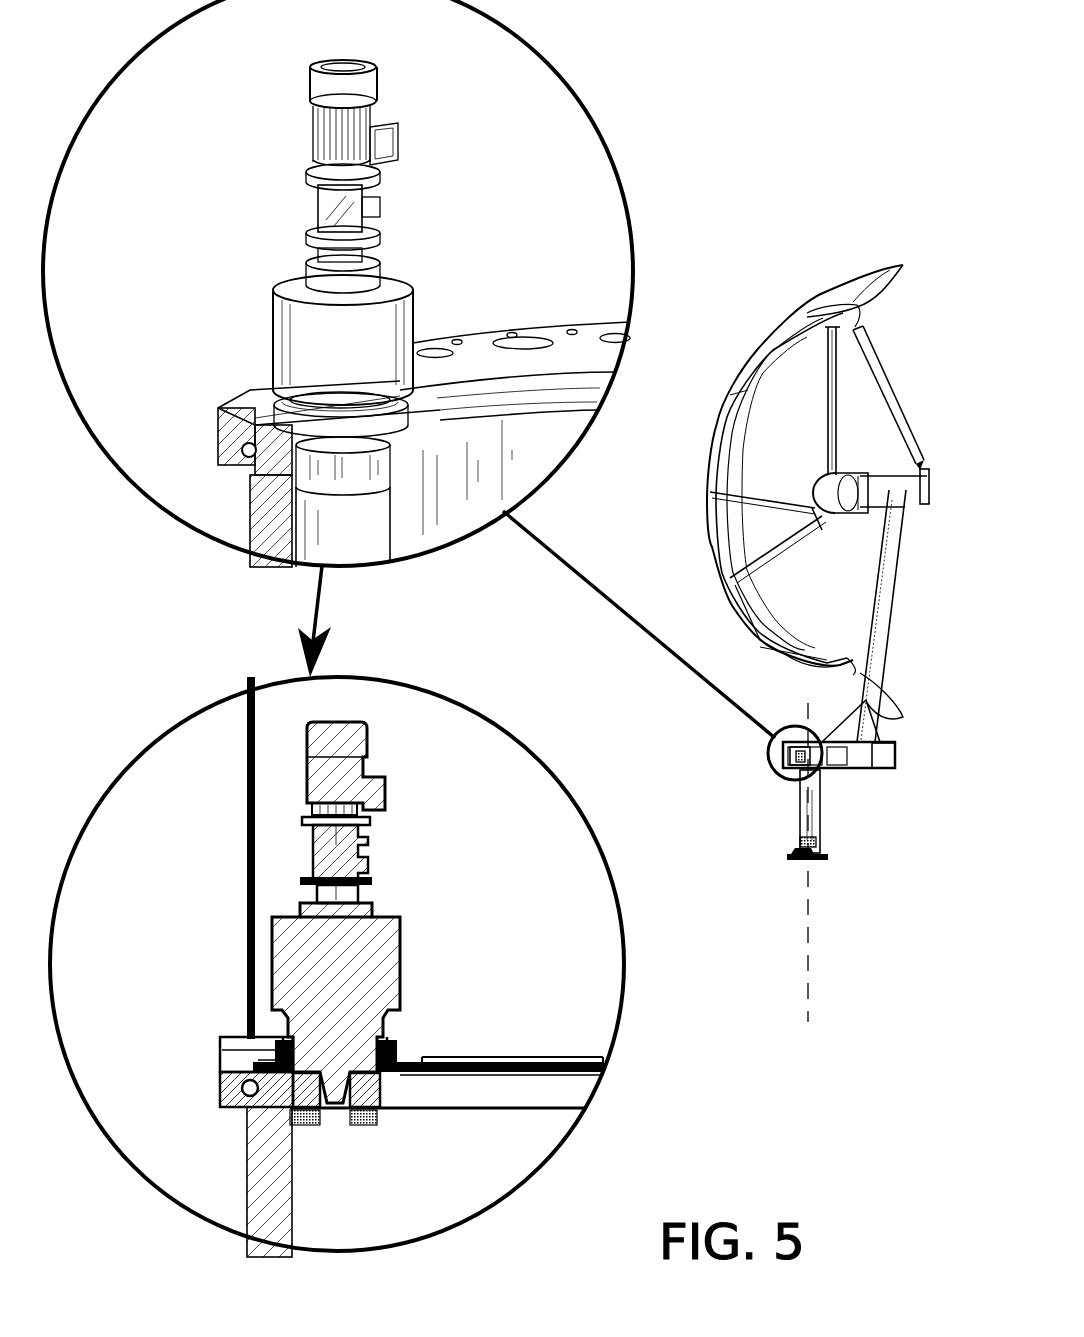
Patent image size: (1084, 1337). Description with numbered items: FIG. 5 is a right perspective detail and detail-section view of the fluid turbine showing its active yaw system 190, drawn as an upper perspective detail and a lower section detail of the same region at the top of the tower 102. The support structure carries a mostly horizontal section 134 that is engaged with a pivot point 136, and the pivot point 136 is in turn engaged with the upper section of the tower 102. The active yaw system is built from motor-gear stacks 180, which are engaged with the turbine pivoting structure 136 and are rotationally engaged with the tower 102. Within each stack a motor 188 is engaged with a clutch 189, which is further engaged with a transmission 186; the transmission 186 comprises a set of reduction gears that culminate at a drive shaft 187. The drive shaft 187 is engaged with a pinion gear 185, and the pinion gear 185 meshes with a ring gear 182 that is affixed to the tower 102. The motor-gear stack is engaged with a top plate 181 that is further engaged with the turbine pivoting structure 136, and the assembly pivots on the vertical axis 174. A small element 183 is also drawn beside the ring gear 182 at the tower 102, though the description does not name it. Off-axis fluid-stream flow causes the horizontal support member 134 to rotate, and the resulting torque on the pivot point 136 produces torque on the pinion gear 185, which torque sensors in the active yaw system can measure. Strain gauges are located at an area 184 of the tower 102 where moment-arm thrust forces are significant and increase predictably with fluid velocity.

The tower 102 is at (240, 515).
The horizontal section 134 is at (865, 758).
The pivot point 136 is at (803, 760).
The vertical axis 174 is at (808, 1000).
The motor-gear stack 180 is at (205, 275).
The top plate 181 is at (467, 360).
The ring gear 182 is at (282, 455).
The sensor 183 is at (243, 450).
The area of the tower 184 is at (813, 840).
The pinion gear 185 is at (345, 470).
The transmission 186 is at (370, 337).
The drive shaft 187 is at (335, 1100).
The motor 188 is at (340, 102).
The clutch 189 is at (343, 203).
The active yaw system 190 is at (377, 492).